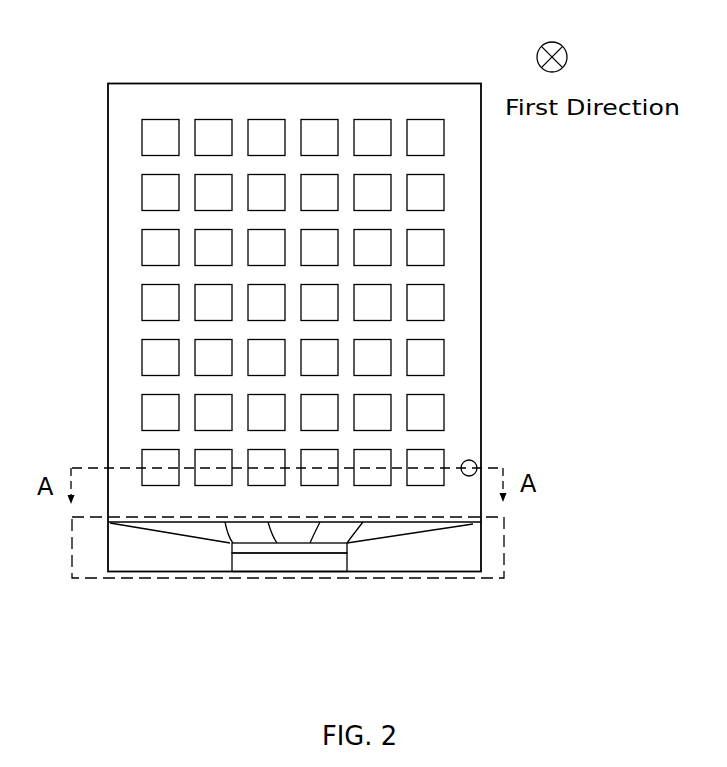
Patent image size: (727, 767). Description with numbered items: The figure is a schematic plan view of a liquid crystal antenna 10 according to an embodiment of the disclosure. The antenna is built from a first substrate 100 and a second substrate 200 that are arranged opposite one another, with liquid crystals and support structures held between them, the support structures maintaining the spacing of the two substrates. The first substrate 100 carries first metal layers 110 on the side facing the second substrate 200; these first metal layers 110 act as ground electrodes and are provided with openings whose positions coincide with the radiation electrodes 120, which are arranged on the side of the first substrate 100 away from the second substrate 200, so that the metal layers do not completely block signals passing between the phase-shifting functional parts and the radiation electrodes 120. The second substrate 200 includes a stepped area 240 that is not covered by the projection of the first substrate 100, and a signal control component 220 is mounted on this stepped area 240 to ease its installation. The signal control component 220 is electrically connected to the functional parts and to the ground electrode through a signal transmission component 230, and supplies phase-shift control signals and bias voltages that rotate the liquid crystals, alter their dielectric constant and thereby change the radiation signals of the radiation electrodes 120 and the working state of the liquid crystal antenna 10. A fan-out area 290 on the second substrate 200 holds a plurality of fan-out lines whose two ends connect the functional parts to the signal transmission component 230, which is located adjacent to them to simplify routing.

The liquid crystal antenna 10 is at (338, 33).
The first substrate 100 is at (357, 328).
The first metal layers 110 is at (534, 443).
The radiation electrodes 120 is at (374, 303).
The second substrate 200 is at (344, 564).
The signal control component 220 is at (363, 592).
The signal transmission component 230 is at (307, 587).
The stepped area 240 is at (368, 578).
The fan-out area 290 is at (275, 577).